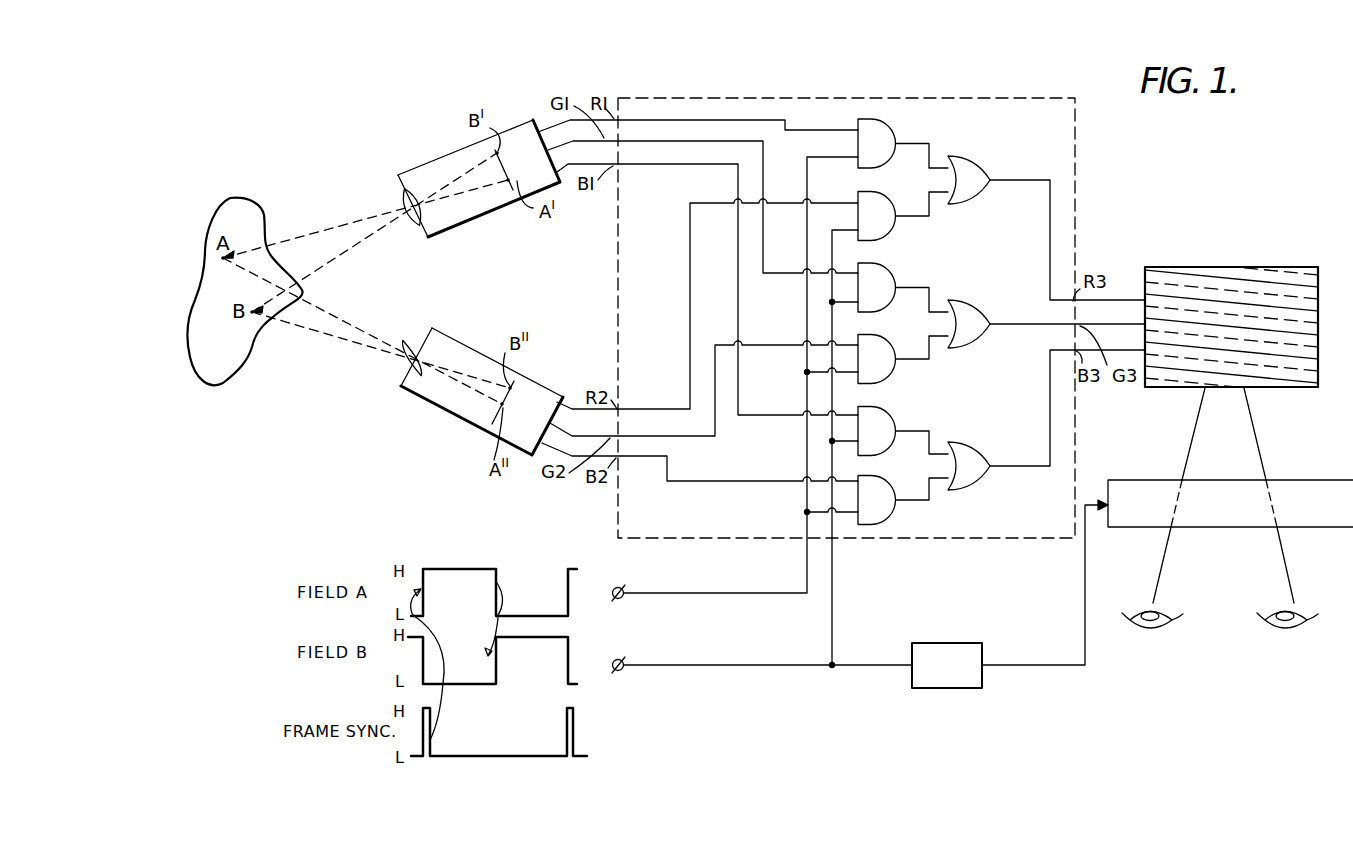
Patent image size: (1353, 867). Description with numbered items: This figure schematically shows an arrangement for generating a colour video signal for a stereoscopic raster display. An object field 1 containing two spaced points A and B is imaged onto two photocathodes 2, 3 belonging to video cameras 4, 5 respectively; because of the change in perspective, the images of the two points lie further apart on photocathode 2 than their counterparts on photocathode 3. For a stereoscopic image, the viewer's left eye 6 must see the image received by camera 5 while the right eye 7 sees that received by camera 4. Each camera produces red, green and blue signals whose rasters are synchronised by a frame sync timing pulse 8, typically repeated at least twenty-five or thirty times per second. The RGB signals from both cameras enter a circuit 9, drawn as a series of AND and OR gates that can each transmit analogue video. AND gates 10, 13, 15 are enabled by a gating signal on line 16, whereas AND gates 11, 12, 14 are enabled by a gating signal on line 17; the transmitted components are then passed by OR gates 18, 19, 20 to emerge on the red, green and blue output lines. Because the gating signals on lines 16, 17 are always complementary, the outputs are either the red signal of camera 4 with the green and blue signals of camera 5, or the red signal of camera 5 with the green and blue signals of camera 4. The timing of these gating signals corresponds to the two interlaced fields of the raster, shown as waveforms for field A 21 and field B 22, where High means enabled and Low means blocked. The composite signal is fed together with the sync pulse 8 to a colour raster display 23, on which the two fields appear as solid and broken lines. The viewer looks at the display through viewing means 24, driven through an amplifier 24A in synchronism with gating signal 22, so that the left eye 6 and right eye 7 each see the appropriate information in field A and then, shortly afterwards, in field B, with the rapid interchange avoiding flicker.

The object field 1 is at (247, 200).
The photocathode 2 is at (513, 188).
The photocathode 3 is at (512, 394).
The video camera 4 is at (430, 162).
The video camera 5 is at (444, 336).
The left eye 6 is at (1153, 629).
The right eye 7 is at (1288, 629).
The timing pulse (frame sync) 8 is at (517, 757).
The circuit 9 is at (873, 97).
The AND gate 10 is at (884, 157).
The AND gate 11 is at (884, 229).
The AND gate 12 is at (884, 301).
The AND gate 13 is at (884, 372).
The AND gate 14 is at (884, 444).
The AND gate 15 is at (884, 513).
The line 16 is at (710, 593).
The line 17 is at (708, 665).
The OR gate 18 is at (970, 174).
The OR gate 19 is at (970, 318).
The OR gate 20 is at (970, 461).
The field A signal 21 is at (460, 568).
The field B signal 22 is at (531, 638).
The colour raster display 23 is at (1245, 267).
The viewing means 24 is at (1290, 480).
The amplifier 24A is at (947, 688).